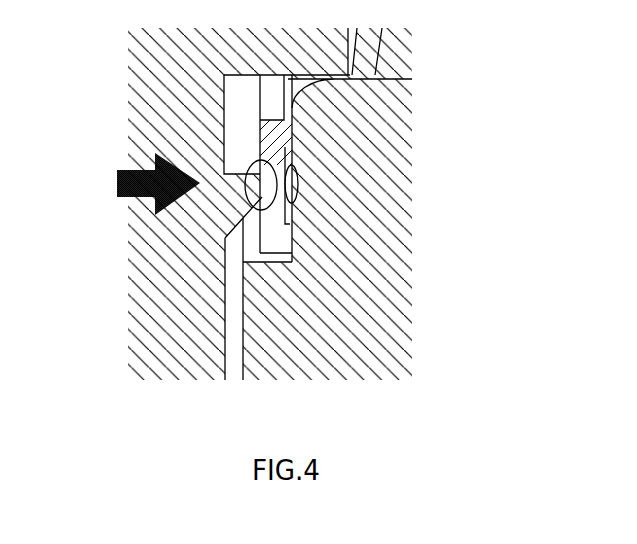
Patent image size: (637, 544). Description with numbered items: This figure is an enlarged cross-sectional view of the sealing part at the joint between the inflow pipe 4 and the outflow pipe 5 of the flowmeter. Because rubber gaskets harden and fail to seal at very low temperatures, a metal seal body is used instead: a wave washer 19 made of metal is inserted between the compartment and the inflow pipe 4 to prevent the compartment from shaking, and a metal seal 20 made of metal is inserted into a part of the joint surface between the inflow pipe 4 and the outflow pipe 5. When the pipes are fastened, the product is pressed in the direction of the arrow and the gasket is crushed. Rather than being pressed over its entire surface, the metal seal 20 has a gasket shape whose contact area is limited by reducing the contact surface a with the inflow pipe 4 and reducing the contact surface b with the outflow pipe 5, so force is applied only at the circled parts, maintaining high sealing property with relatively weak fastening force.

The inflow pipe 4 is at (184, 338).
The outflow pipe 5 is at (339, 337).
The wave washer 19 is at (378, 52).
The metal seal 20 is at (260, 145).
The contact surface with the inflow pipe a is at (252, 185).
The contact surface with the outflow pipe b is at (301, 184).